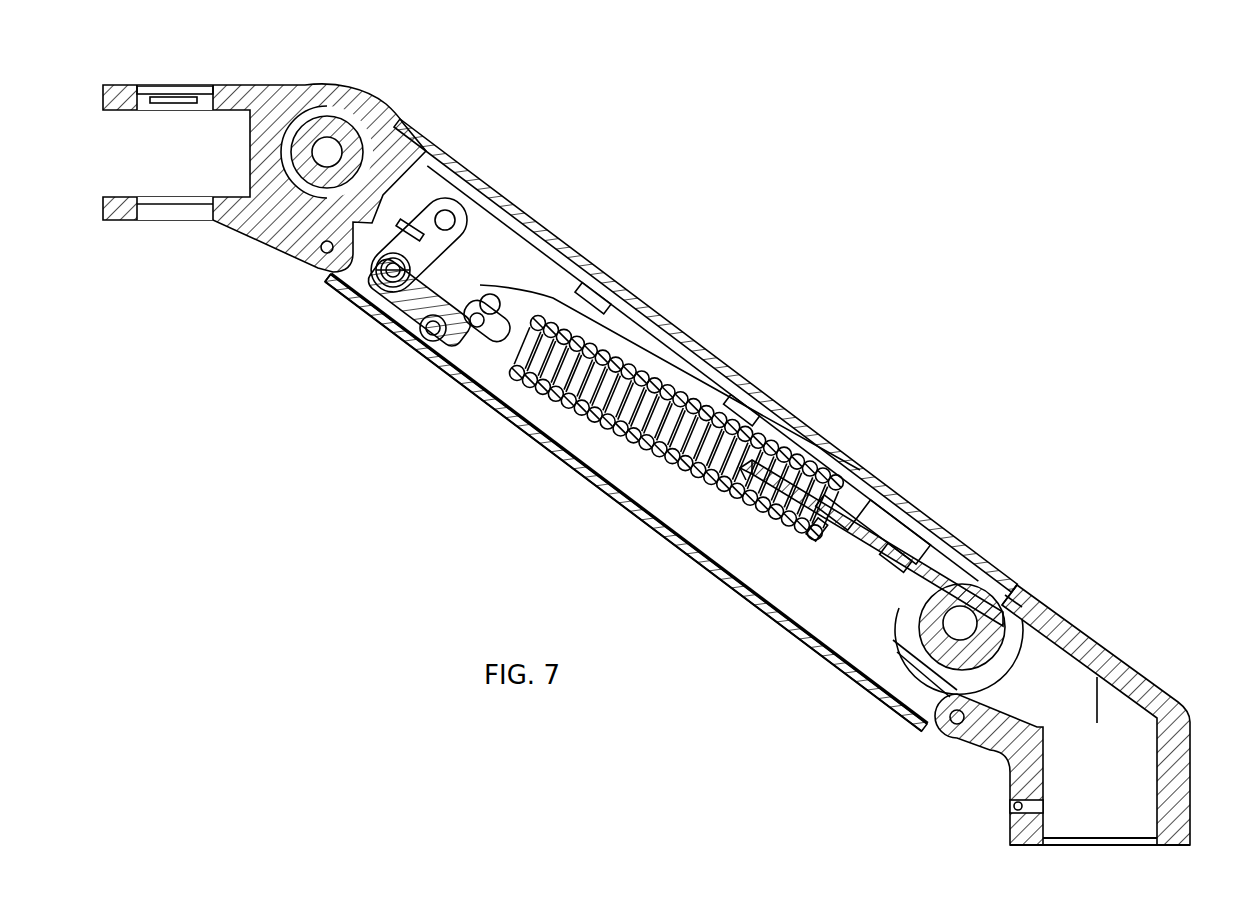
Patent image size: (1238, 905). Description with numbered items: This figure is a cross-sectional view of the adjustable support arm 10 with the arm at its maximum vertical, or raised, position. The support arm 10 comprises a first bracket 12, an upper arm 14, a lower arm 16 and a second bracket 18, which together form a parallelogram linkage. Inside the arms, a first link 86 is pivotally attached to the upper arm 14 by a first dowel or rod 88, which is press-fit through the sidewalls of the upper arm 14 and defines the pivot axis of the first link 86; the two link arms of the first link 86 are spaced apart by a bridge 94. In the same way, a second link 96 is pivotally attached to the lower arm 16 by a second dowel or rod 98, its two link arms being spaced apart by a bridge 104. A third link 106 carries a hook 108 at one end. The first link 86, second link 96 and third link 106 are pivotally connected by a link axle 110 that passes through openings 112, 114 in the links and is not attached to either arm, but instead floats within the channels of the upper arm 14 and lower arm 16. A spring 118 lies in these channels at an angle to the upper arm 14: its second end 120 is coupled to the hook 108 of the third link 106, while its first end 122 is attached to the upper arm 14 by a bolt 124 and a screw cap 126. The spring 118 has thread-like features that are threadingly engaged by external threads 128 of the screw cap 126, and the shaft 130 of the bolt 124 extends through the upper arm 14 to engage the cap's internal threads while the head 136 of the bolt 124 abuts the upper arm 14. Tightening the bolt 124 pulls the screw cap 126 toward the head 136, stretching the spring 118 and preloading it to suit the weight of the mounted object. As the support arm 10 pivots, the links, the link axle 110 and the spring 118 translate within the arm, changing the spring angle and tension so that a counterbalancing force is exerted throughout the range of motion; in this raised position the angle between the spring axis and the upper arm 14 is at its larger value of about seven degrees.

The adjustable support arm 10 is at (842, 197).
The first bracket 12 is at (1150, 697).
The upper arm 14 is at (780, 405).
The lower arm 16 is at (652, 513).
The second bracket 18 is at (247, 92).
The first link 86 is at (458, 222).
The first dowel or rod 88 is at (449, 212).
The bridge 94 is at (410, 218).
The second link 96 is at (433, 338).
The second dowel or rod 98 is at (432, 342).
The bridge 104 is at (417, 290).
The third link 106 is at (425, 290).
The hook 108 is at (481, 330).
The link axle 110 is at (377, 272).
The opening 112 is at (377, 277).
The opening 114 is at (393, 270).
The spring 118 is at (657, 380).
The second end 120 is at (497, 297).
The first end 122 is at (817, 540).
The bolt 124 is at (947, 550).
The screw cap 126 is at (860, 490).
The external threads 128 is at (827, 470).
The shaft 130 is at (1010, 587).
The head 136 is at (1020, 592).